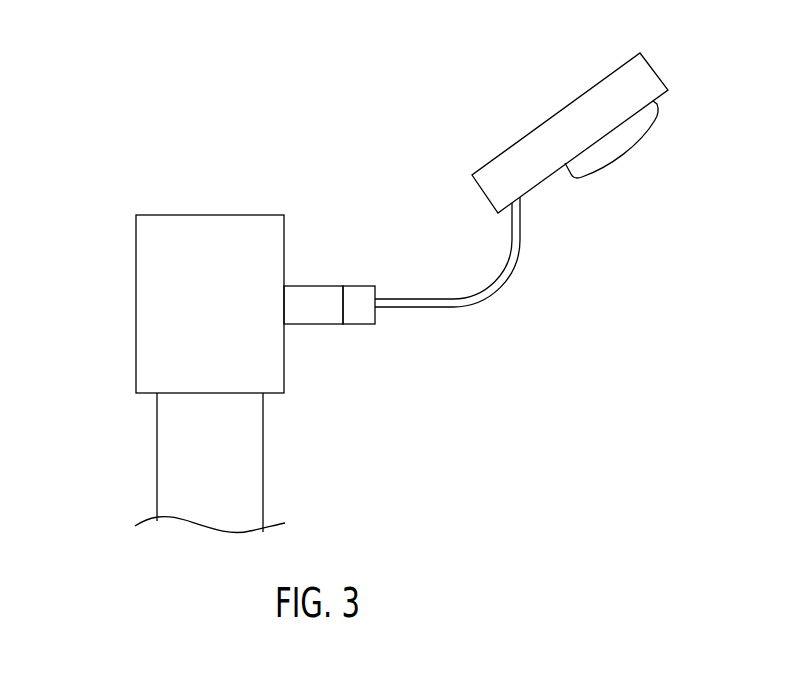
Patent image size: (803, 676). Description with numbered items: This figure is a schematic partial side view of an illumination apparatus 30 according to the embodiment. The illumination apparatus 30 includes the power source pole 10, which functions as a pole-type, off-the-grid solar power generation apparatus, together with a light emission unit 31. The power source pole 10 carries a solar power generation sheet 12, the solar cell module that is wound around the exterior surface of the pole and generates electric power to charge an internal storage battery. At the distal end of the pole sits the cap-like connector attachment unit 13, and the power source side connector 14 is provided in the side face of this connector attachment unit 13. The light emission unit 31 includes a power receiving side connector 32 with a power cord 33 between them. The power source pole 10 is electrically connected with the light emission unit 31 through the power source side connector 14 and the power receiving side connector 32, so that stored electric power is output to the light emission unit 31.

The illumination apparatus 30 is at (133, 93).
The power source pole 10 is at (169, 207).
The connector attachment unit 13 is at (142, 312).
The power source side connector 14 is at (313, 295).
The solar power generation sheet 12 is at (247, 468).
The power receiving side connector 32 is at (360, 295).
The power cord 33 is at (508, 278).
The light emission unit 31 is at (642, 77).